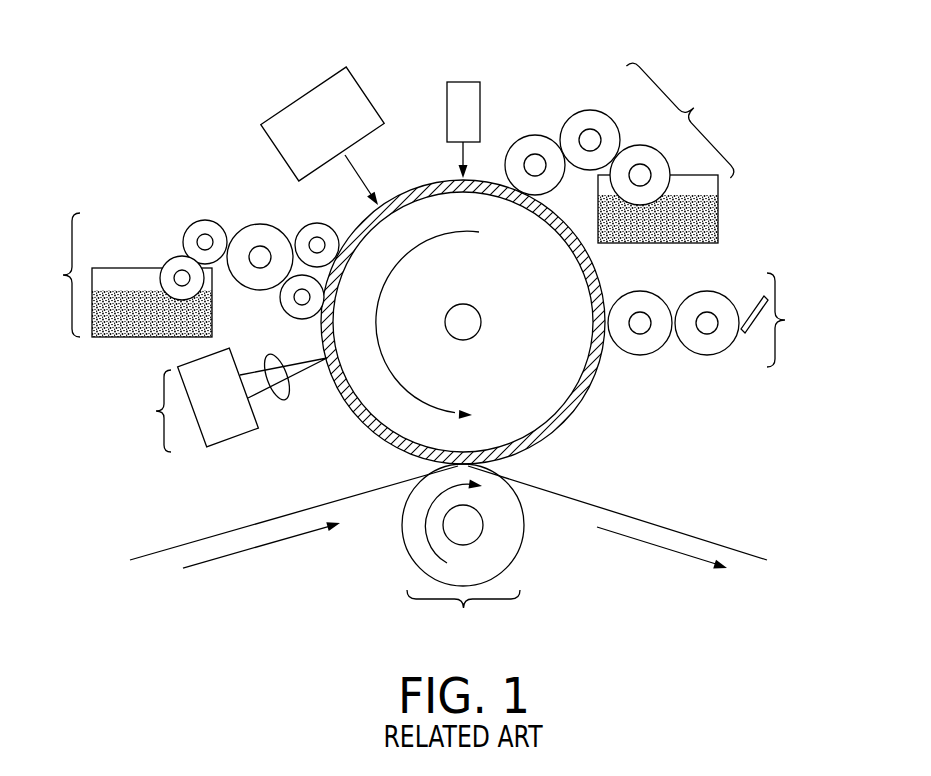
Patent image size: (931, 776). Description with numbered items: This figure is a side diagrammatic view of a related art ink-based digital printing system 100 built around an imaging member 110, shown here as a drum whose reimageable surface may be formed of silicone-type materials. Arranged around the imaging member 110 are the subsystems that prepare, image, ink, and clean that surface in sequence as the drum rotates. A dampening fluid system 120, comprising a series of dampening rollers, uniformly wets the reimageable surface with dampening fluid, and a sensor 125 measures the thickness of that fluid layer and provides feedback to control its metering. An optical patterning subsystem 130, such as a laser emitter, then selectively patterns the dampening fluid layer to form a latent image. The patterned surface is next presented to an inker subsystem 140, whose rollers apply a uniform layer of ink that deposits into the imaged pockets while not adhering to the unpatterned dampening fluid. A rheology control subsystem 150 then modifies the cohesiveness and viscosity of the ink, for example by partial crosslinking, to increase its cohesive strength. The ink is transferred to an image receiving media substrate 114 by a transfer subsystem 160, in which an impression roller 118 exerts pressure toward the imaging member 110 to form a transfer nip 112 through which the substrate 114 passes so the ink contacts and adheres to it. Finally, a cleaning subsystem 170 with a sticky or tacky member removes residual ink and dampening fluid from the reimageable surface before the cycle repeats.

The system 100 is at (182, 94).
The imaging member 110 is at (588, 396).
The transfer nip 112 is at (463, 452).
The image receiving media substrate 114 is at (240, 528).
The impression roller 118 is at (517, 555).
The dampening fluid system 120 is at (619, 153).
The sensor 125 is at (463, 82).
The optical patterning subsystem 130 is at (368, 95).
The inker subsystem 140 is at (182, 275).
The rheology control subsystem 150 is at (227, 400).
The transfer subsystem 160 is at (463, 616).
The cleaning subsystem 170 is at (715, 320).